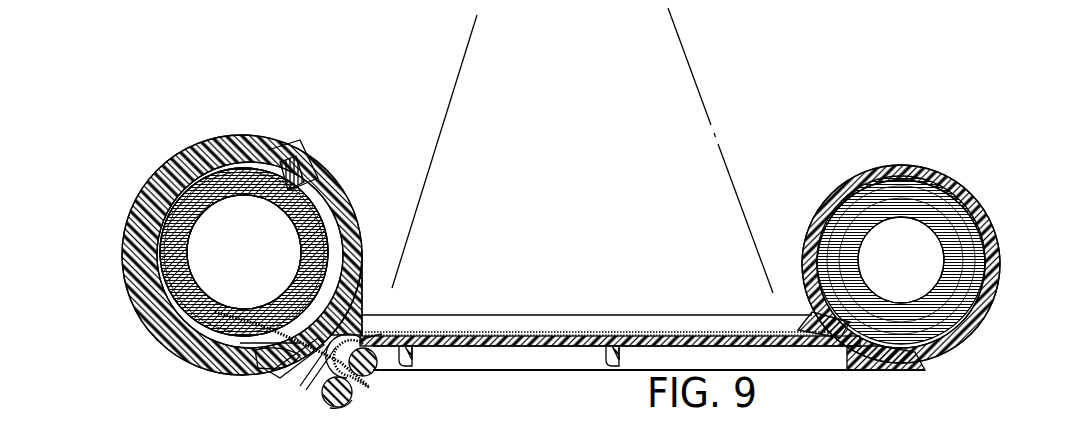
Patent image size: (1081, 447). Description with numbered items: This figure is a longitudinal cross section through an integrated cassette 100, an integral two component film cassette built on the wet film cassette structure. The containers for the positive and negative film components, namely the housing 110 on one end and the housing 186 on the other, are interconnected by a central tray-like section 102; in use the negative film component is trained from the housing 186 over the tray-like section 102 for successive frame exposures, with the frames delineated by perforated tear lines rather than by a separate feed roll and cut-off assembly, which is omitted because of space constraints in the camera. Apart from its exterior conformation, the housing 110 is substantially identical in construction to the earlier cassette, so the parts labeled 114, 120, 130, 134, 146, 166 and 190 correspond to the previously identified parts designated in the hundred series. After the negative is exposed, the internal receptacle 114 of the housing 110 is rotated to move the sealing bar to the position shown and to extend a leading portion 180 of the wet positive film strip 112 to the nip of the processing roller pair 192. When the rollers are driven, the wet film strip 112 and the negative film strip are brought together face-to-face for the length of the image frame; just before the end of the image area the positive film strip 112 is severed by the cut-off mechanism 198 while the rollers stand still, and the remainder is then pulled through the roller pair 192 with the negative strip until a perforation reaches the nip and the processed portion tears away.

The integrated cassette 100 is at (642, 320).
The tray-like section 102 is at (588, 348).
The housing 110 is at (256, 244).
The positive film strip 112 is at (203, 207).
The internal receptacle 114 is at (258, 152).
The housing outer shell 120 is at (341, 194).
The tape guide member 130 is at (287, 363).
The tape web 134 is at (273, 330).
The brake block 146 is at (310, 168).
The guide roller 166 is at (262, 372).
The leading portion 180 is at (314, 356).
The housing 186 is at (983, 220).
The tape guide hook 190 is at (370, 332).
The processing roller pair 192 is at (372, 382).
The cut-off mechanism 198 is at (299, 392).